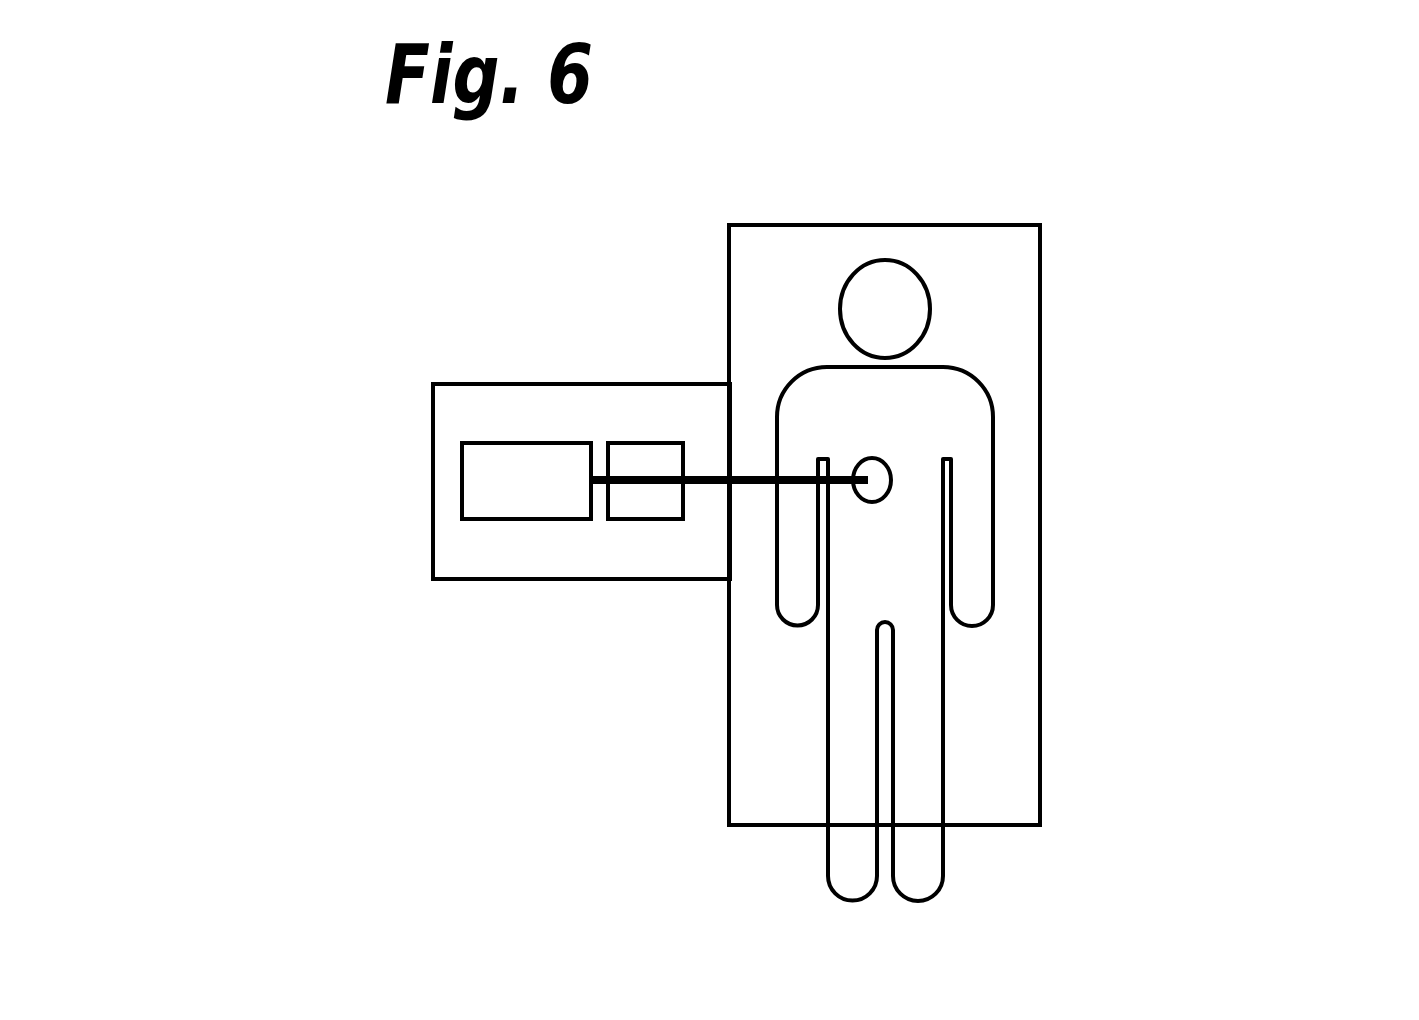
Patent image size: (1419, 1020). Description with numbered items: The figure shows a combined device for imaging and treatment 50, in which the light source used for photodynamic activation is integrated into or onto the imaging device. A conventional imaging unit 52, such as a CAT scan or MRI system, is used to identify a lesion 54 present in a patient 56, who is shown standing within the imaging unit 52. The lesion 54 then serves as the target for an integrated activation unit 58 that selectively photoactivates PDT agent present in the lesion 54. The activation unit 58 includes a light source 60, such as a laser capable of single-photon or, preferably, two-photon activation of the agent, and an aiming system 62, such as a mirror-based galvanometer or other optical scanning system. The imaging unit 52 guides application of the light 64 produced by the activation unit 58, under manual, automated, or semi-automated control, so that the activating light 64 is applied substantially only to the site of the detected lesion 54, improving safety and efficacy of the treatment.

The device for imaging and treatment 50 is at (965, 170).
The imaging unit 52 is at (1062, 303).
The lesion 54 is at (889, 480).
The patient 56 is at (967, 415).
The activation unit 58 is at (584, 360).
The light source 60 is at (540, 510).
The aiming system 62 is at (642, 508).
The light 64 is at (709, 490).